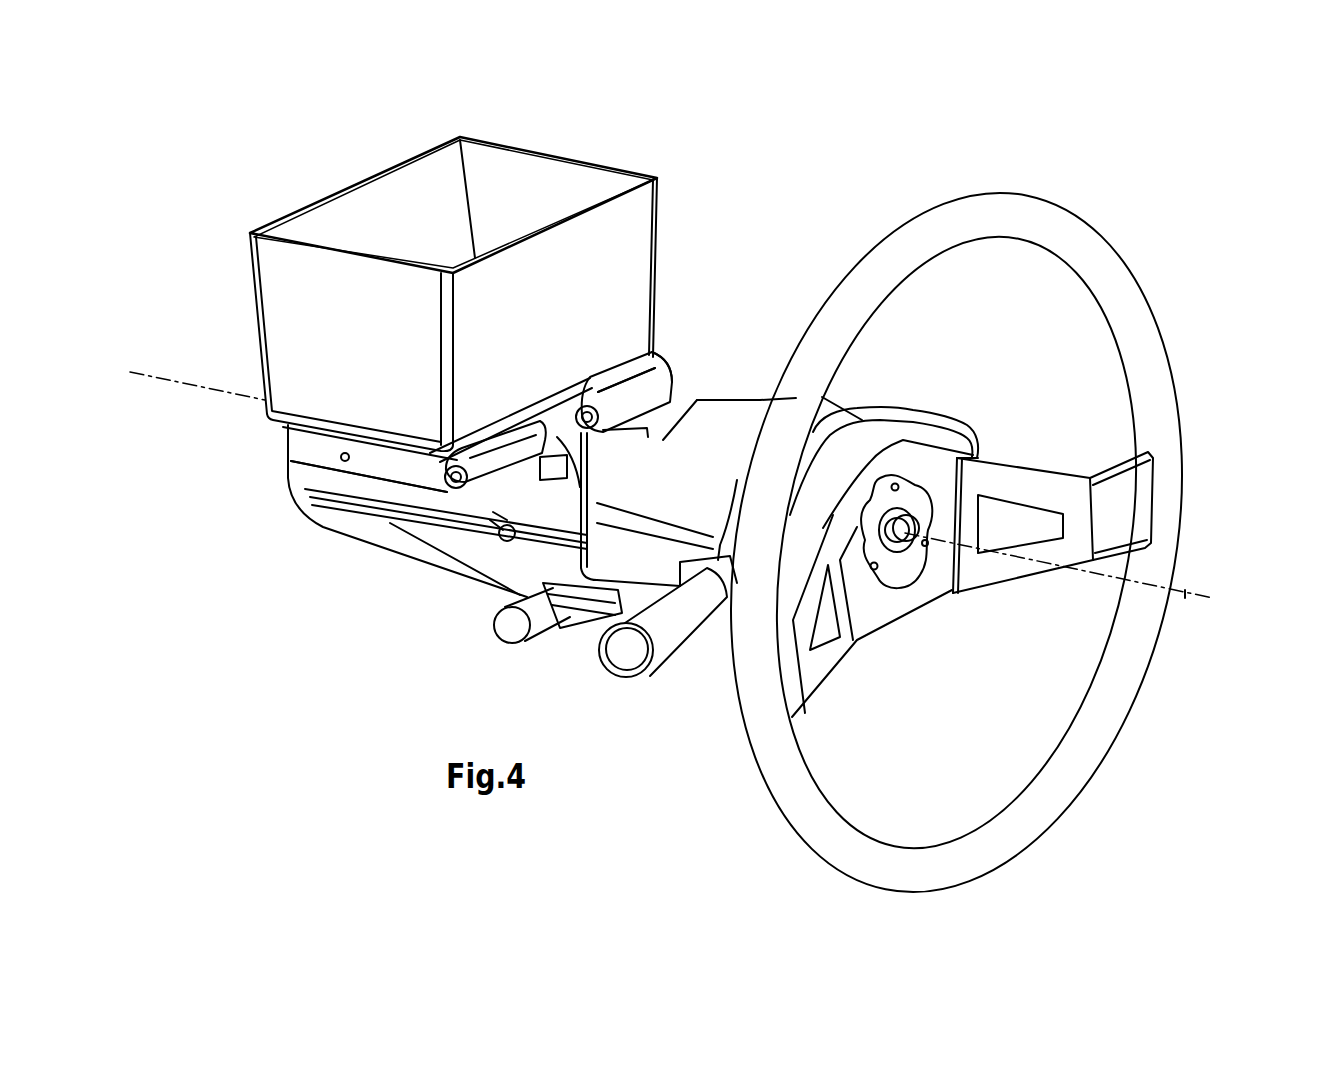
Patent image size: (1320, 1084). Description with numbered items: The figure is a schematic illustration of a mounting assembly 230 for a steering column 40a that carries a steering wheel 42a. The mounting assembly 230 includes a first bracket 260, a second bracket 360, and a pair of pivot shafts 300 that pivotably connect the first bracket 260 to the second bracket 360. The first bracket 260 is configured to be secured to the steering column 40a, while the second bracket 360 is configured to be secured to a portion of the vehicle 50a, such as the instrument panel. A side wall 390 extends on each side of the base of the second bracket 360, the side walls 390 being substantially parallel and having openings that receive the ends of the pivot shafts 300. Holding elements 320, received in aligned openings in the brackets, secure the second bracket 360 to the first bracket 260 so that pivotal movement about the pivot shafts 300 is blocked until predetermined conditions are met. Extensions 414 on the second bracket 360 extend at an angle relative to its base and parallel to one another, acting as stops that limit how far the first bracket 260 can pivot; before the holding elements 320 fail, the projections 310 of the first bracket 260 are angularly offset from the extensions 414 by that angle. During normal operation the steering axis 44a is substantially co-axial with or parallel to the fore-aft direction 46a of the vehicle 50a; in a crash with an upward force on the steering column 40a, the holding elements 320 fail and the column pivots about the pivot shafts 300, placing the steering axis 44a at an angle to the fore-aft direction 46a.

The vehicle 50a is at (660, 201).
The steering wheel 42a is at (1124, 257).
The steering column 40a is at (740, 394).
The steering axis 44a is at (1197, 594).
The fore-aft direction of the vehicle 46a is at (1185, 598).
The extension 414 is at (509, 425).
The mounting assembly 230 is at (662, 353).
The projection 310 is at (497, 430).
The first bracket 260 is at (640, 396).
The pivot shaft 300 is at (451, 495).
The second bracket 360 is at (304, 449).
The holding element 320 is at (342, 463).
The side wall 390 is at (390, 468).